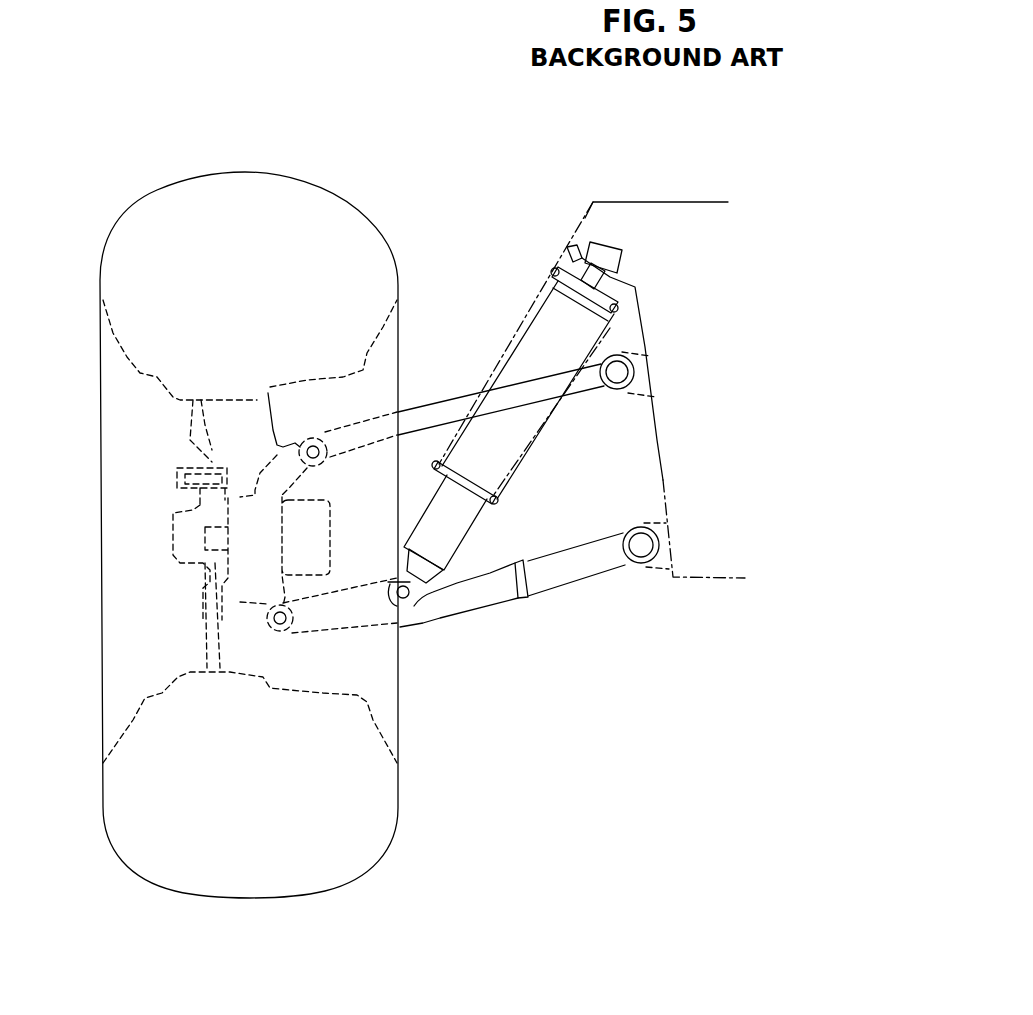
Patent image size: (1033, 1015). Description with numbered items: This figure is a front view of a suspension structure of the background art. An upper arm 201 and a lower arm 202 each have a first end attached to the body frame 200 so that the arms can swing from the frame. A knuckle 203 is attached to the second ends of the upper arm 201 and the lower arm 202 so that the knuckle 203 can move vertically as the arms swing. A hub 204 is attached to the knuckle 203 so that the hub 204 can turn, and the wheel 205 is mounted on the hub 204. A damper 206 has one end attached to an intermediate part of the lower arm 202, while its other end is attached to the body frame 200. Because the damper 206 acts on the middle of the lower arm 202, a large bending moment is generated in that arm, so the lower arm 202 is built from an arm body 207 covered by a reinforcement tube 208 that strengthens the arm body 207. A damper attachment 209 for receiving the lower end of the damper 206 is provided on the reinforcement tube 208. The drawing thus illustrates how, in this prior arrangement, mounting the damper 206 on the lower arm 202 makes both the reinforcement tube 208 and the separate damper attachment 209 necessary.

The body frame 200 is at (692, 202).
The upper arm 201 is at (446, 404).
The lower arm 202 is at (500, 613).
The knuckle 203 is at (268, 393).
The hub 204 is at (230, 576).
The wheel 205 is at (227, 171).
The damper 206 is at (523, 447).
The arm body 207 is at (590, 578).
The reinforcement tube 208 is at (447, 622).
The damper attachment 209 is at (463, 578).